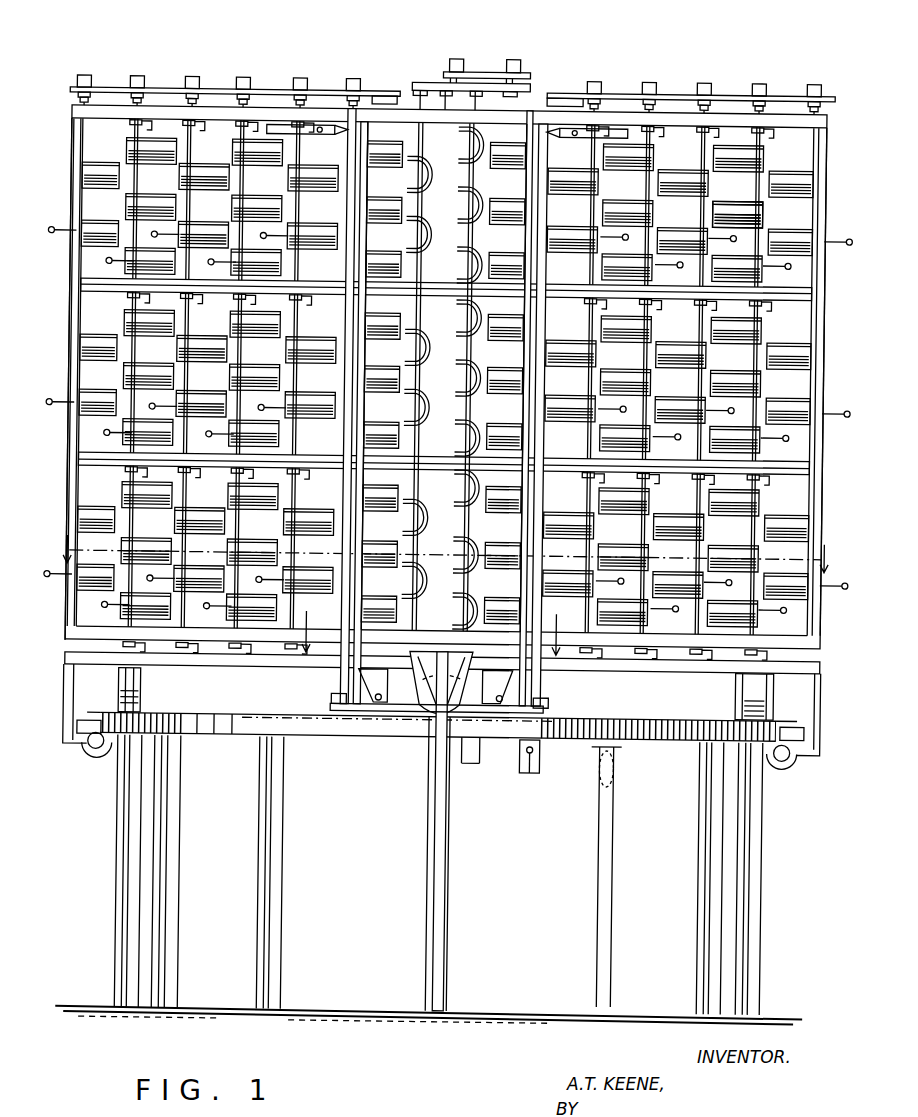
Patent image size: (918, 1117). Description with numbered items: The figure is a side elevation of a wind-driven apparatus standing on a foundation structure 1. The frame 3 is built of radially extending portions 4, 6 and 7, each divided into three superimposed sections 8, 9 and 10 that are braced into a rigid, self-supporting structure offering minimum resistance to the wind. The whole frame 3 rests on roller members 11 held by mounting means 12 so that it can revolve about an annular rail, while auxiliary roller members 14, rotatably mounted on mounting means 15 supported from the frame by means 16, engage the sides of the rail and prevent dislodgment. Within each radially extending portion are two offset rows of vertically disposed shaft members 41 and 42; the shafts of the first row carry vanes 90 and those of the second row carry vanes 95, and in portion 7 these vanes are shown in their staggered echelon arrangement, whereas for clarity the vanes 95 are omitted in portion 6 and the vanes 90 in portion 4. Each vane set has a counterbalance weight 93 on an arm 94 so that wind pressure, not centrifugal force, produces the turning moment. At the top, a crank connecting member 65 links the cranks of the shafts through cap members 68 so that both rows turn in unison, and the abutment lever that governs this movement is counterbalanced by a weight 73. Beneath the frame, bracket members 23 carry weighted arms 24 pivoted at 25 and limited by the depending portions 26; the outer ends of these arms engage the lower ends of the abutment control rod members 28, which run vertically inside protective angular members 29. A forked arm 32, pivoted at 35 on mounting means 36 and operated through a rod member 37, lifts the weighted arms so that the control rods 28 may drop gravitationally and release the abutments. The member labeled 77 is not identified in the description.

The foundation structure 1 is at (262, 795).
The frame 3 is at (283, 58).
The radially extending portion 4 is at (160, 120).
The radially extending portion 6 is at (772, 130).
The radially extending portion 7 is at (500, 128).
The section 8 is at (92, 132).
The section 9 is at (92, 305).
The section 10 is at (92, 470).
The roller member 11 is at (150, 683).
The mounting means 12 is at (150, 695).
The auxiliary roller member 14 is at (104, 750).
The mounting means 15 is at (96, 753).
The means 16 is at (72, 676).
The bracket member 23 is at (426, 660).
The arm 24 is at (346, 700).
The pivot 25 is at (385, 698).
The depending portion 26 is at (492, 700).
The abutment control rod member 28 is at (347, 435).
The angular member 29 is at (347, 316).
The forked arm 32 is at (478, 745).
The pivot 35 is at (540, 758).
The mounting means 36 is at (536, 768).
The rod member 37 is at (620, 800).
The shaft member 41 is at (415, 132).
The shaft member 42 is at (480, 165).
The crank connecting member 65 is at (230, 81).
The cap member 68 is at (86, 77).
The counterbalance weight 73 is at (300, 133).
The rail bracket 77 is at (375, 98).
The vane 90 is at (745, 188).
The counterbalance weight 93 is at (735, 245).
The arm 94 is at (658, 263).
The vane 95 is at (465, 228).